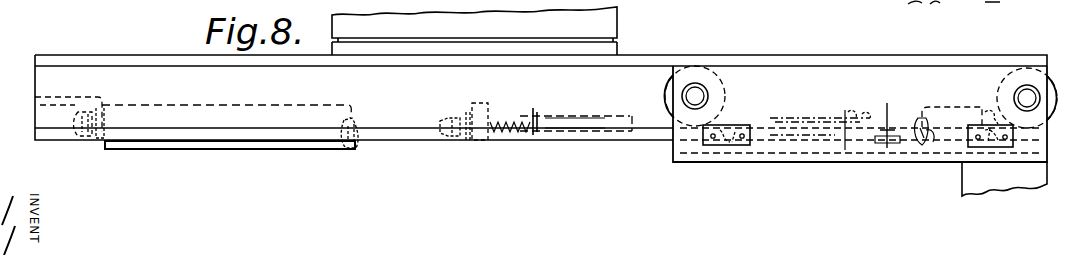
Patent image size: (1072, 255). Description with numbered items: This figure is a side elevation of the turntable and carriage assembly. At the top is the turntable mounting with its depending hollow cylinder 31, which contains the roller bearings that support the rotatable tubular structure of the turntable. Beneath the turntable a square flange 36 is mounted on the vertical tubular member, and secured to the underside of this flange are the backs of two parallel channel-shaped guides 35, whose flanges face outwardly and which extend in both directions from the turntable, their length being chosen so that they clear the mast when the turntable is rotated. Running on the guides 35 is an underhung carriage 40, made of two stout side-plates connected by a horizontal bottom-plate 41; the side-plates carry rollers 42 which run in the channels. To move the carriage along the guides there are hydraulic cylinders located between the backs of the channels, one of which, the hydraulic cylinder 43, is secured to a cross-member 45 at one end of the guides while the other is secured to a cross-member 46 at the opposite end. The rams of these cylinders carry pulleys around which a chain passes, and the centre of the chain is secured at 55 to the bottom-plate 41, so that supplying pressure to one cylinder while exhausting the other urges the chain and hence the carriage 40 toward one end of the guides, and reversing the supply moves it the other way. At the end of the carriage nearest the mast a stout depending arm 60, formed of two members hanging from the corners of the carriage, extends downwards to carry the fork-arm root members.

The depending hollow cylinder 31 is at (603, 23).
The channel-shaped guides 35 is at (196, 73).
The square flange 36 is at (617, 47).
The underhung carriage 40 is at (780, 76).
The horizontal bottom-plate 41 is at (887, 117).
The rollers 42 is at (666, 98).
The hydraulic cylinder 43 is at (290, 112).
The cross-member 45 is at (68, 96).
The cross-member 46 is at (986, 106).
The chain securing point 55 is at (850, 118).
The depending arm 60 is at (978, 173).